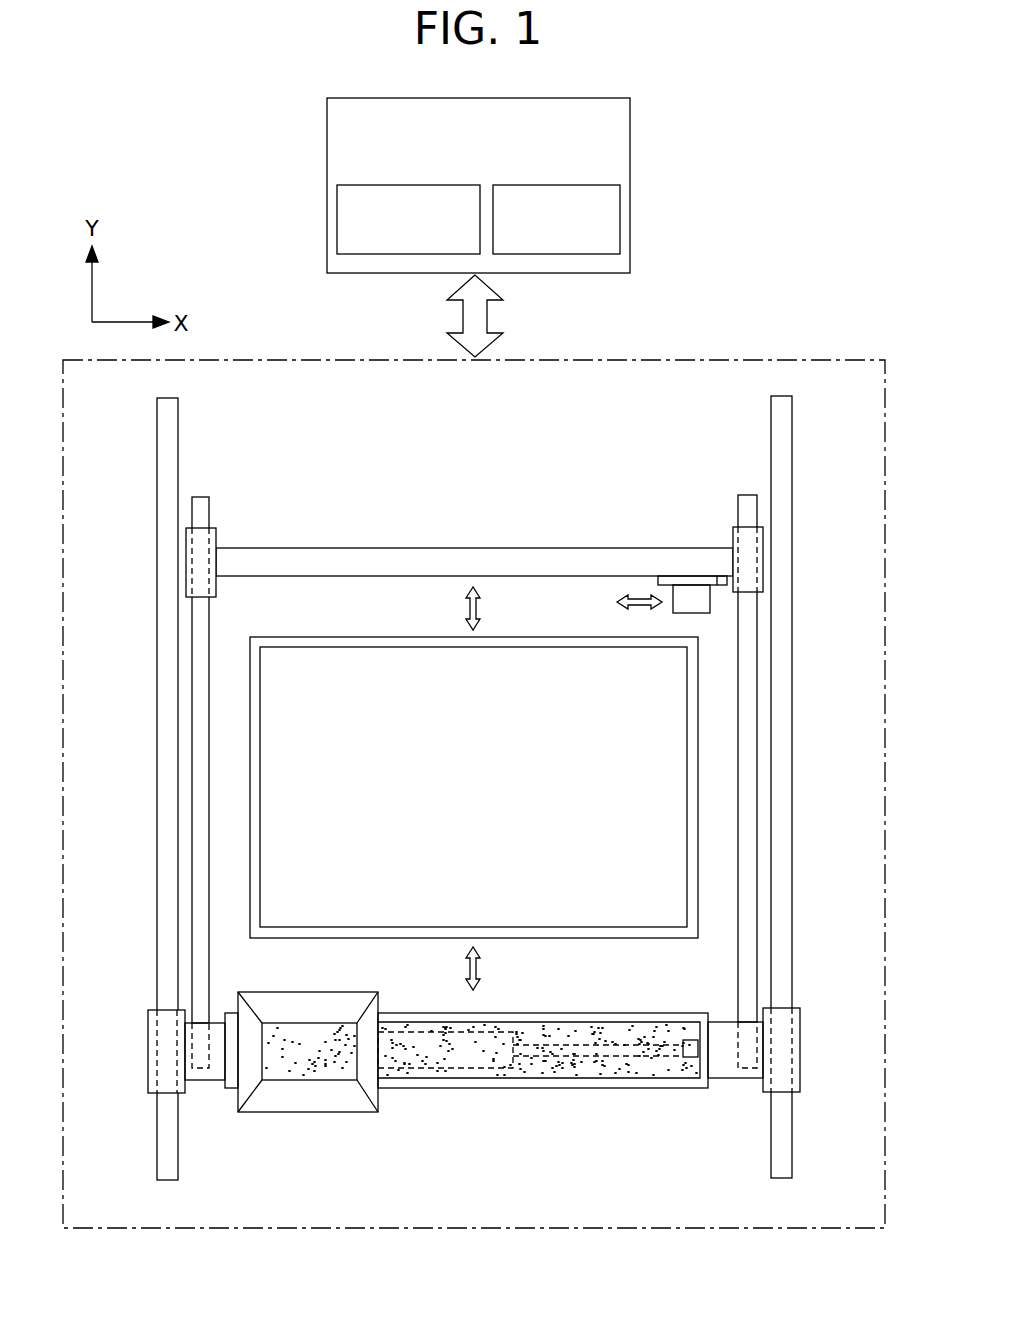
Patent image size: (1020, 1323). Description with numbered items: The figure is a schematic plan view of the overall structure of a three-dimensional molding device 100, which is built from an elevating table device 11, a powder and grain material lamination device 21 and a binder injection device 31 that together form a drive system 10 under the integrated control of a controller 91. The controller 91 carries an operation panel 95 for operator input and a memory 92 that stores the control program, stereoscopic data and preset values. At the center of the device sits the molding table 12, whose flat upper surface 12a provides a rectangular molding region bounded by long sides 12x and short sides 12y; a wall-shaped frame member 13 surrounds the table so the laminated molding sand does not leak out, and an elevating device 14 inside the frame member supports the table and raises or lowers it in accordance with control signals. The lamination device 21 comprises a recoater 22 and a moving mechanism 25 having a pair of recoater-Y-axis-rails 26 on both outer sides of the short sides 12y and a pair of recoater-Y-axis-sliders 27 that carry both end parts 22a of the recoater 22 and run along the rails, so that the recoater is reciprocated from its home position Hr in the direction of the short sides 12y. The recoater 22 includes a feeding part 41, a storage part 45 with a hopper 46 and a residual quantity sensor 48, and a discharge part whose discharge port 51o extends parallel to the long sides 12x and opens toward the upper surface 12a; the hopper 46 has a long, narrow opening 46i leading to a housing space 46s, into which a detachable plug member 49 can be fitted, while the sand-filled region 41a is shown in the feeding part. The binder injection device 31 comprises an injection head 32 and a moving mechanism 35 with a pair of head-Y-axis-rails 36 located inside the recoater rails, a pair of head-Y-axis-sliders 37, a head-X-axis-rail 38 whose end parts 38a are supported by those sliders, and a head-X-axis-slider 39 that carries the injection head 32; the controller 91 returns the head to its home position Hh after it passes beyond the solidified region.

The three-dimensional molding device 100 is at (792, 198).
The controller 91 is at (630, 122).
The operation panel 95 is at (416, 184).
The memory 92 is at (557, 184).
The drive system 10 is at (812, 432).
The recoater-Y-axis-rails 26 is at (167, 873).
The moving mechanism 25 is at (816, 995).
The head-Y-axis-rails 36 is at (200, 915).
The moving mechanism 35 is at (782, 608).
The head-X-axis-rail 38 is at (397, 560).
The end parts 38a is at (218, 560).
The binder injection device 31 is at (778, 556).
The head-Y-axis-sliders 37 is at (218, 587).
The home position Hh is at (693, 528).
The injection head 32 is at (690, 608).
The head-X-axis-slider 39 is at (718, 588).
The molding table 12 is at (285, 690).
The frame member 13 is at (253, 794).
The elevating table device 11 is at (285, 748).
The upper surface 12a is at (493, 801).
The long sides 12x is at (528, 645).
The short sides 12y is at (686, 747).
The elevating device 14 is at (662, 812).
The recoater-Y-axis-sliders 27 is at (152, 1072).
The home position Hr is at (816, 1052).
The recoater 22 is at (495, 1090).
The end parts 22a is at (215, 1073).
The feeding part 41 is at (305, 1112).
The wiper absorbing member 41a is at (305, 1032).
The storage part 45 is at (585, 1021).
The hopper 46 is at (610, 1028).
The plug member 49 is at (440, 1062).
The residual quantity sensor 48 is at (690, 1054).
The discharge port 51o is at (545, 1040).
The powder and grain material lamination device 21 is at (540, 1108).
The housing space 46s is at (578, 1067).
The opening 46i is at (640, 1085).